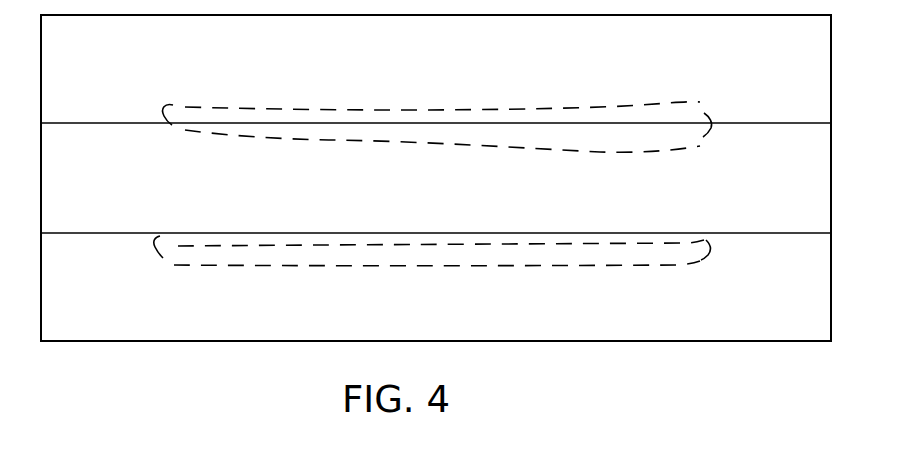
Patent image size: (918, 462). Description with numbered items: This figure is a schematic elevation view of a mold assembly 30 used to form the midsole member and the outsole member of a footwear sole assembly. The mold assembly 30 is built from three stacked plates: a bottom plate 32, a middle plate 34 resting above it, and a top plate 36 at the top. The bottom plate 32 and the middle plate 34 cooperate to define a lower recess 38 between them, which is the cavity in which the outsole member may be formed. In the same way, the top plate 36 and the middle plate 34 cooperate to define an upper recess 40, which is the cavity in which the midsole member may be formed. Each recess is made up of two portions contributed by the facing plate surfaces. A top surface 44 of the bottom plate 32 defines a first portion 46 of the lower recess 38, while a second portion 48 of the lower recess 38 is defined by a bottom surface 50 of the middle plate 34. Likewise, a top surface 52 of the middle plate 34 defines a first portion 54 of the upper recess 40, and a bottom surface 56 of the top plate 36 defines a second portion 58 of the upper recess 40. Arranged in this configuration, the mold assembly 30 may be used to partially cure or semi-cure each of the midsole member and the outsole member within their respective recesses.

The mold assembly 30 is at (143, 361).
The bottom plate 32 is at (90, 291).
The middle plate 34 is at (90, 176).
The top plate 36 is at (90, 63).
The lower recess 38 is at (574, 255).
The upper recess 40 is at (645, 118).
The top surface of bottom plate 44 is at (730, 232).
The first portion of lower recess 46 is at (238, 263).
The second portion of lower recess 48 is at (374, 244).
The bottom surface of middle plate 50 is at (784, 235).
The top surface of middle plate 52 is at (735, 122).
The first portion of upper recess 54 is at (320, 139).
The bottom surface of top plate 56 is at (780, 125).
The second portion of upper recess 58 is at (388, 110).